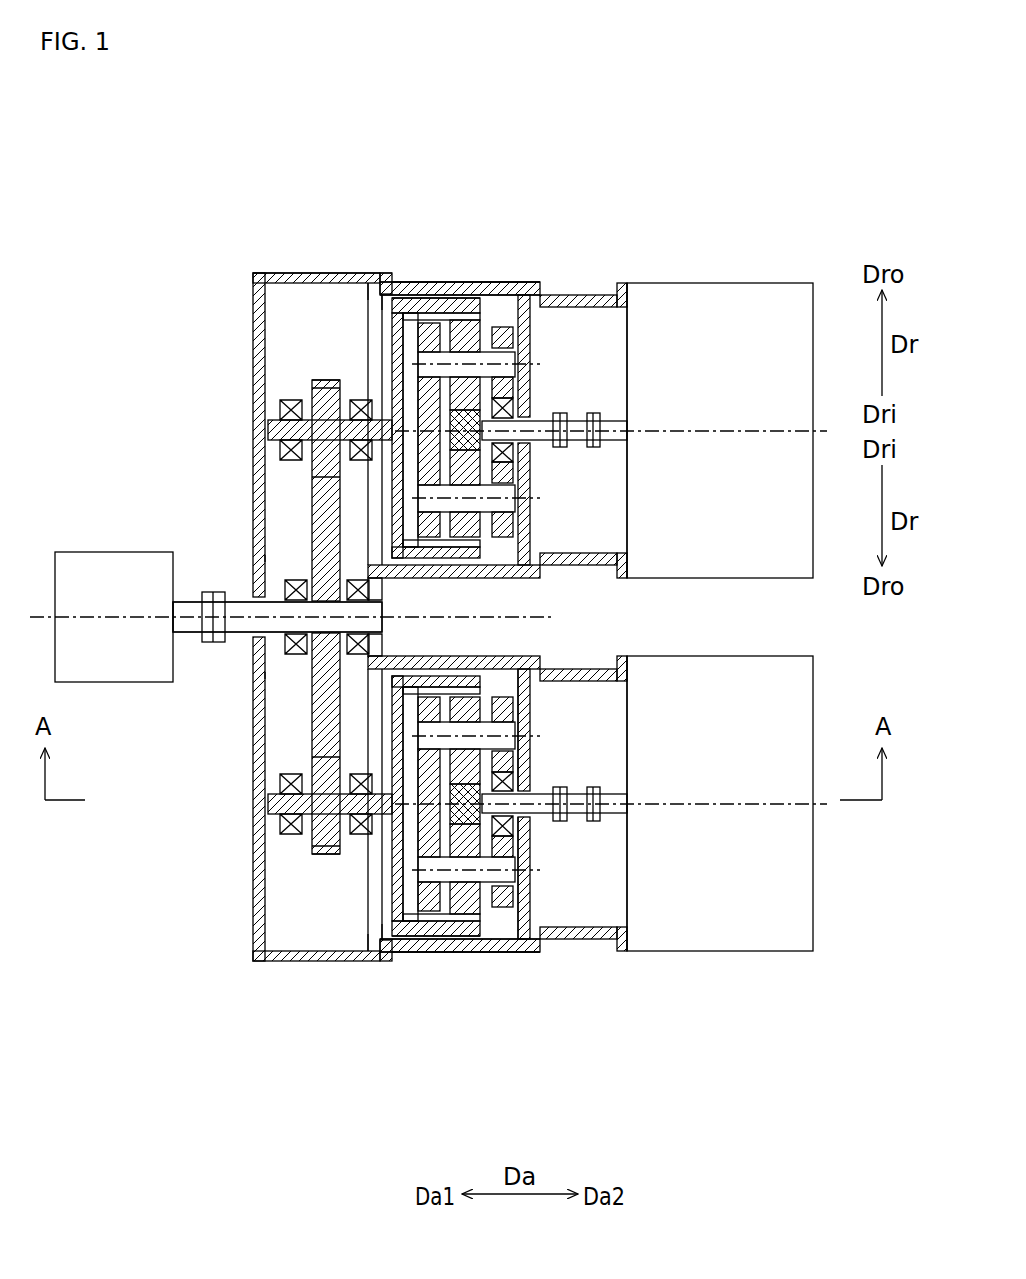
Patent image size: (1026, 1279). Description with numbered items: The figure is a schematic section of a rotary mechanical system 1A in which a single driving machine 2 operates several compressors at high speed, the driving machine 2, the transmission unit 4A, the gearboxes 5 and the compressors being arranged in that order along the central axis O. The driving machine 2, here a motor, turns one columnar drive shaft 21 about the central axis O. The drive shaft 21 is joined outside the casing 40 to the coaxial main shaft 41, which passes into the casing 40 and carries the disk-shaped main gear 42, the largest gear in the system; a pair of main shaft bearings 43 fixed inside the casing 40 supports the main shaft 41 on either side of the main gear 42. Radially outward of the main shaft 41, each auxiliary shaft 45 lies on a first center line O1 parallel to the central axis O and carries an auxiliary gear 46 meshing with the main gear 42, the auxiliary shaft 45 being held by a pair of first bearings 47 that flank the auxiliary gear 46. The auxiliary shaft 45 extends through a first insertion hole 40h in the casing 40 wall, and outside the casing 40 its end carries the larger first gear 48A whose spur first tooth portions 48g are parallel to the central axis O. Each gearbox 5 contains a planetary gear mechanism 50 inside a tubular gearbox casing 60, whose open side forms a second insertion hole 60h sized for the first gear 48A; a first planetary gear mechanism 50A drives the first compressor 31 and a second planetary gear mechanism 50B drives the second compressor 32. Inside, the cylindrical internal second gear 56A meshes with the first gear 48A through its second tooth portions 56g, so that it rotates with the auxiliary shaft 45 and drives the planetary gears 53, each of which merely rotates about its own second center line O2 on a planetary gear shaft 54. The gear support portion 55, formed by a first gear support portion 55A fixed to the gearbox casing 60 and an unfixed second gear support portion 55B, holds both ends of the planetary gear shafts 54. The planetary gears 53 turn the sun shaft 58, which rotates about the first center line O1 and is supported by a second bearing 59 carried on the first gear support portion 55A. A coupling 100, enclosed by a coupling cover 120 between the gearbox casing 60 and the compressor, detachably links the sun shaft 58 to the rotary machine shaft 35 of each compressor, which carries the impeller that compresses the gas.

The rotary mechanical system 1A is at (716, 180).
The driving machine 2 is at (65, 548).
The drive shaft 21 is at (188, 628).
The first compressor 31 is at (781, 281).
The second compressor 32 is at (795, 953).
The rotary machine shaft 35 is at (606, 416).
The transmission unit 4A is at (286, 270).
The casing 40 is at (253, 303).
The first insertion hole 40h is at (375, 290).
The main shaft 41 is at (238, 603).
The main gear 42 is at (300, 530).
The main shaft bearing 43 is at (300, 680).
The auxiliary shaft 45 is at (300, 398).
The auxiliary gear 46 is at (327, 392).
The first bearing 47 is at (297, 500).
The first gear 48A is at (425, 320).
The first tooth portion 48g is at (400, 298).
The gearbox 5 is at (512, 283).
The planetary gear mechanism 50 is at (460, 617).
The first planetary gear mechanism 50A is at (467, 282).
The second planetary gear mechanism 50B is at (466, 954).
The planetary gear 53 is at (535, 345).
The planetary gear shaft 54 is at (546, 350).
The gear support portion 55 is at (436, 617).
The first gear support portion 55A is at (565, 955).
The second gear support portion 55B is at (430, 960).
The second gear 56A is at (455, 283).
The second tooth portion 56g is at (372, 293).
The sun shaft 58 is at (540, 462).
The second bearing 59 is at (537, 550).
The gearbox casing 60 is at (493, 283).
The second insertion hole 60h is at (300, 558).
The coupling 100 is at (575, 440).
The coupling cover 120 is at (605, 283).
The central axis O is at (40, 600).
The first center line O1 is at (817, 432).
The second center line O2 is at (540, 364).